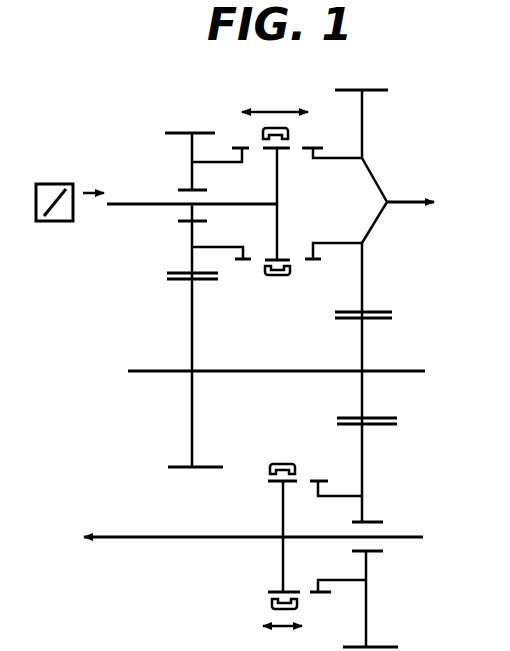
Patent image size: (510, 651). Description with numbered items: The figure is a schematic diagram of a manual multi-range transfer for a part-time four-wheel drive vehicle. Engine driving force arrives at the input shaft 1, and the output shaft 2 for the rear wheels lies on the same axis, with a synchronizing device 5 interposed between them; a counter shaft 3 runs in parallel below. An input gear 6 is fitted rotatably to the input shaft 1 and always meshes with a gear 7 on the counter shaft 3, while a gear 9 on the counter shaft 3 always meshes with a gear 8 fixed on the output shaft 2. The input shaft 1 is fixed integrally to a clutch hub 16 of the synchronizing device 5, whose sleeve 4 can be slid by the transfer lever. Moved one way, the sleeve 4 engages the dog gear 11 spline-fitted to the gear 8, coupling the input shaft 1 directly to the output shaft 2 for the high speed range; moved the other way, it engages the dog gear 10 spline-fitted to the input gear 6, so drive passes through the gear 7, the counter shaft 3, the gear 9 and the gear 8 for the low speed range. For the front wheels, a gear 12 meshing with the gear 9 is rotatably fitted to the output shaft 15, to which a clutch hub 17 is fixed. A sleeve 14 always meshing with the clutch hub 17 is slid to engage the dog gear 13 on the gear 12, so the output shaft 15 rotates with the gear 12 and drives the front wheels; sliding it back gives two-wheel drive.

The input shaft 1 is at (143, 204).
The output shaft 2 is at (410, 202).
The counter shaft 3 is at (270, 371).
The sleeve 4 is at (285, 273).
The synchronizing device 5 is at (313, 137).
The input gear 6 is at (182, 133).
The gear 7 is at (192, 333).
The gear 8 is at (378, 90).
The gear 9 is at (362, 343).
The dog gear 10 is at (242, 147).
The dog gear 11 is at (318, 148).
The gear 12 is at (366, 474).
The dog gear 13 is at (316, 481).
The sleeve 14 is at (275, 465).
The output shaft 15 is at (195, 537).
The clutch hub 16 is at (277, 172).
The clutch hub 17 is at (283, 520).